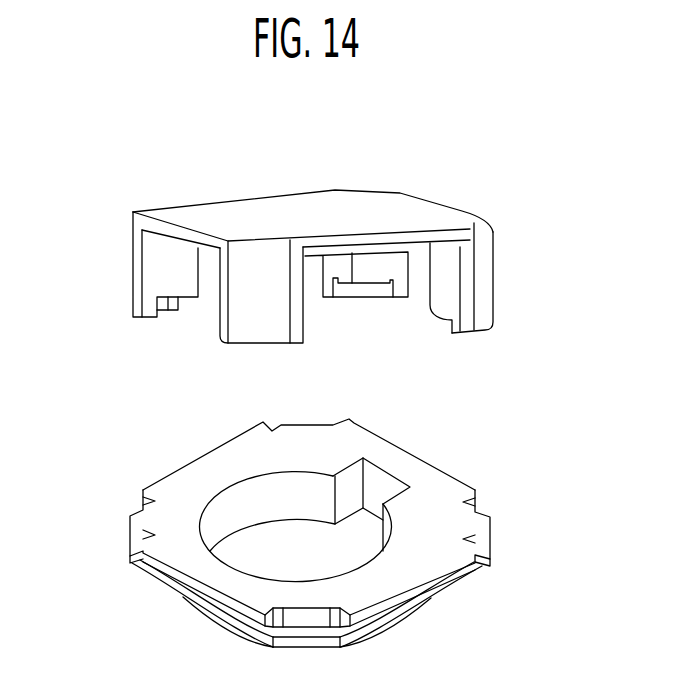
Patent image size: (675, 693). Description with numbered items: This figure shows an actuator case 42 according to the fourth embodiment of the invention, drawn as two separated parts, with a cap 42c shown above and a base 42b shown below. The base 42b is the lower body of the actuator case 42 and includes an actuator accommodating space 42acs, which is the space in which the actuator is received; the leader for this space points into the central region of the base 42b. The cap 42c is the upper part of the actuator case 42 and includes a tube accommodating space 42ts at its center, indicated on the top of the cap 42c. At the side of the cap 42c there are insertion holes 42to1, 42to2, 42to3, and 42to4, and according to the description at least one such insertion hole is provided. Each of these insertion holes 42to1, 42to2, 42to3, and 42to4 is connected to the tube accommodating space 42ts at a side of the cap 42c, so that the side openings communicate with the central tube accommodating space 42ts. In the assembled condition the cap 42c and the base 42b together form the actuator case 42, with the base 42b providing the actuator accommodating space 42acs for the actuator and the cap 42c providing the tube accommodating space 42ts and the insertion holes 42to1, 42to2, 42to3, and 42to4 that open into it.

The actuator case 42 is at (539, 139).
The cap 42c is at (440, 217).
The tube accommodating space 42ts is at (313, 232).
The insertion hole 42to1 is at (305, 328).
The insertion hole 42to2 is at (408, 278).
The insertion hole 42to3 is at (325, 285).
The insertion hole 42to4 is at (220, 326).
The base 42b is at (440, 495).
The actuator accommodating space 42acs is at (330, 555).